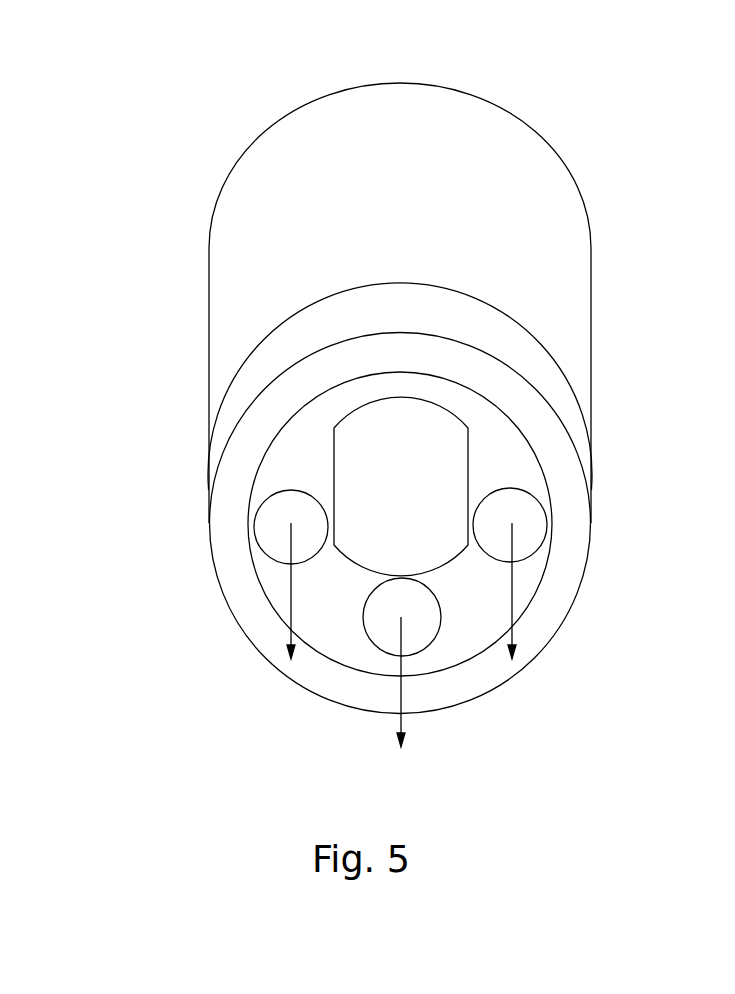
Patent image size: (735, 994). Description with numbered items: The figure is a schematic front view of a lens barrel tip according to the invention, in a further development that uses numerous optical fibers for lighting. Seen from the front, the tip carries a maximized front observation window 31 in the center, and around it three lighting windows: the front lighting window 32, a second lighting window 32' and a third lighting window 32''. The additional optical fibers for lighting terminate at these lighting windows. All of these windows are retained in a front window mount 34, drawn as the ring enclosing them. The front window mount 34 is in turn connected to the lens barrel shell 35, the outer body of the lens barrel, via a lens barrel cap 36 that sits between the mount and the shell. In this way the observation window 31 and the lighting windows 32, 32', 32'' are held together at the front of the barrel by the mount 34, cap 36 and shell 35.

The front observation window 31 is at (428, 465).
The front lighting window 32 is at (227, 574).
The second lighting window 32' is at (310, 664).
The third lighting window 32'' is at (583, 573).
The front window mount 34 is at (303, 451).
The lens barrel shell 35 is at (291, 148).
The lens barrel cap 36 is at (272, 363).